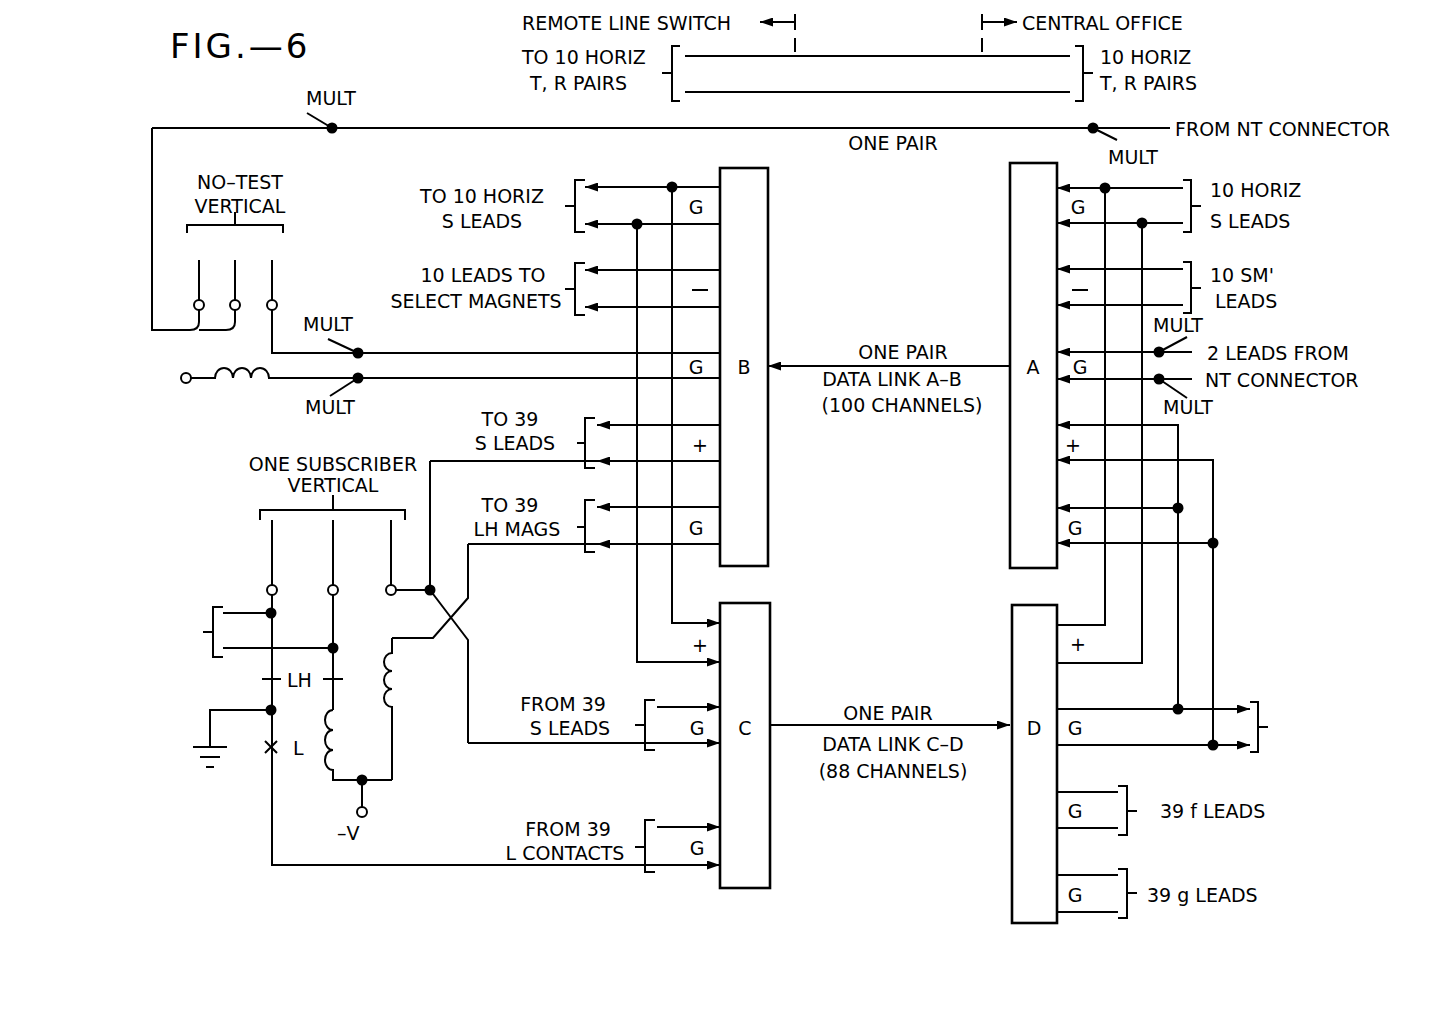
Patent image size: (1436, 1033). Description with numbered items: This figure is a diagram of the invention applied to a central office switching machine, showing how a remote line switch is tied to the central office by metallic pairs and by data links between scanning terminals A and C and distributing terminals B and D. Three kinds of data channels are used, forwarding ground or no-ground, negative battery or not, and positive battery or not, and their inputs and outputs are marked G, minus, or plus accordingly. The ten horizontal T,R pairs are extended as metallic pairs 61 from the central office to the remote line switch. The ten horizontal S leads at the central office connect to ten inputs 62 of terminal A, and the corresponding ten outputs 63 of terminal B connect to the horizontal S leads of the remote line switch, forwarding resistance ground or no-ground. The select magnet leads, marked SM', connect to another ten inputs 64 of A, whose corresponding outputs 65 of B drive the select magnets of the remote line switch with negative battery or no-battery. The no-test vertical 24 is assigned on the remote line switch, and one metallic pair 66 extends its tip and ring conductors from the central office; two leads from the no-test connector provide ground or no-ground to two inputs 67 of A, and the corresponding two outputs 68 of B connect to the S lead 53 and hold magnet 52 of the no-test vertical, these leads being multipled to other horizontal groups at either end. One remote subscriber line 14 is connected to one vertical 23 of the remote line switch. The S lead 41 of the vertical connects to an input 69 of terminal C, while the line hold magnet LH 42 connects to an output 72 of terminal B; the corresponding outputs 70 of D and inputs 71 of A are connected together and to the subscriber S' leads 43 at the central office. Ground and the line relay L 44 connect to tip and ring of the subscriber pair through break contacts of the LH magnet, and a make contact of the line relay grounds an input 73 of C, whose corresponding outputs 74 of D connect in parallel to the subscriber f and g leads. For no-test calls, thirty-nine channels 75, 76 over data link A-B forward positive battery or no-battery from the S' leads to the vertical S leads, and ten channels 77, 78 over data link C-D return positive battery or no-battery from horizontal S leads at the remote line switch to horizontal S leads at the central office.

The remote subscriber line 14 is at (213, 655).
The vertical 23 is at (260, 510).
The no-test vertical 24 is at (276, 222).
The S lead 41 is at (392, 574).
The line hold magnet LH 42 is at (394, 698).
The subscriber S' leads 43 is at (1262, 752).
The line relay L 44 is at (326, 760).
The hold magnet 52 is at (245, 394).
The S lead 53 is at (275, 284).
The metallic pairs 61 is at (932, 92).
The inputs 62 is at (1120, 205).
The outputs 63 is at (652, 205).
The inputs 64 is at (1120, 287).
The outputs 65 is at (652, 288).
The metallic pair 66 is at (877, 128).
The inputs 67 is at (1126, 365).
The outputs 68 is at (539, 366).
The input 69 is at (594, 725).
The outputs 70 is at (1153, 727).
The inputs 71 is at (1137, 526).
The output 72 is at (594, 525).
The input 73 is at (495, 846).
The outputs 74 is at (1130, 826).
The channels 75 is at (1135, 585).
The channels 76 is at (575, 443).
The channels 77 is at (677, 423).
The channels 78 is at (1102, 424).